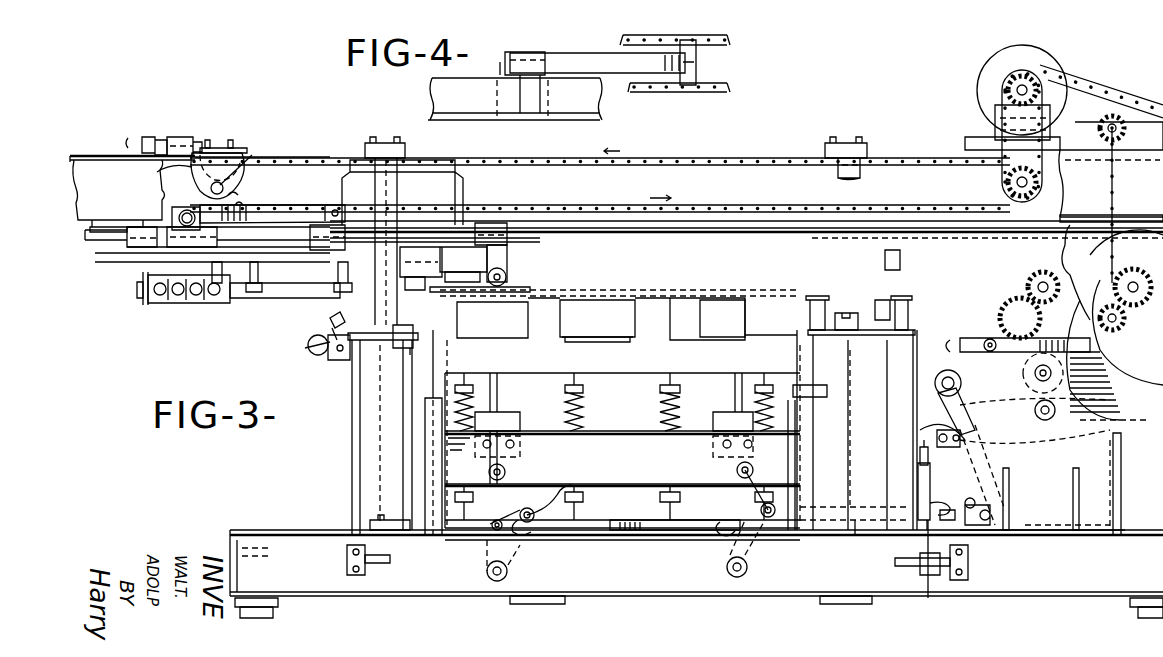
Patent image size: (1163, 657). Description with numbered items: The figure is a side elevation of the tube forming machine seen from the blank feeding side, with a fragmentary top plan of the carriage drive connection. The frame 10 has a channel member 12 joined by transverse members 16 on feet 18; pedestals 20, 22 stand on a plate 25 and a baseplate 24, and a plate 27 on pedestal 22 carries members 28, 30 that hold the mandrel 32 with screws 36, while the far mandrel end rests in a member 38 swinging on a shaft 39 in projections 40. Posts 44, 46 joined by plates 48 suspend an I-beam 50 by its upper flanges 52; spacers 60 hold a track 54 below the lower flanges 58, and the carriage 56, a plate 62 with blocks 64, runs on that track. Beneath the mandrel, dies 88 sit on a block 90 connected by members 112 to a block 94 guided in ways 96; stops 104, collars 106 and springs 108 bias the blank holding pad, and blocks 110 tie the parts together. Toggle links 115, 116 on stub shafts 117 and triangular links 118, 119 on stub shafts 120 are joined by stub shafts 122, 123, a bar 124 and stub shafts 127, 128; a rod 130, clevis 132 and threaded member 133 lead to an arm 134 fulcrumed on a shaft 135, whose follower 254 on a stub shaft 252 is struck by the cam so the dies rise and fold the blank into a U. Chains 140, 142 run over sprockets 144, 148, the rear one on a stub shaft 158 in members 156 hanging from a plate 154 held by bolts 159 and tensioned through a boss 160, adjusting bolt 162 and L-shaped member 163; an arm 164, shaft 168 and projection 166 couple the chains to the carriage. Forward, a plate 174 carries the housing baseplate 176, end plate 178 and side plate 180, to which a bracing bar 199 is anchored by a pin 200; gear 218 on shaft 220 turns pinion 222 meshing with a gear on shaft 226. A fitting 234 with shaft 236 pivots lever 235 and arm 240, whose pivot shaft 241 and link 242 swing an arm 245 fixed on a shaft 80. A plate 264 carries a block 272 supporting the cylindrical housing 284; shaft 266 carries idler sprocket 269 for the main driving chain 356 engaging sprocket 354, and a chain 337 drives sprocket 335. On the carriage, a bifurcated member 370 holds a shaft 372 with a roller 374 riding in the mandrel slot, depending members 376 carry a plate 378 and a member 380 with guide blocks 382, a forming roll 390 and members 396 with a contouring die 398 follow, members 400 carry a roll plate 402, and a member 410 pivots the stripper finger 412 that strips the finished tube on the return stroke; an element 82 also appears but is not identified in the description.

In FIG. 3, the frame 10 is at (430, 606).
In FIG. 3, the channel shaped structural member 12 is at (655, 596).
In FIG. 3, the transversely extending frame member 16 is at (284, 608).
In FIG. 3, the supporting feet 18 is at (275, 615).
In FIG. 3, the pedestal 20 is at (355, 447).
In FIG. 3, the pedestal 22 is at (870, 443).
In FIG. 3, the baseplate 24 is at (858, 525).
In FIG. 3, the transversely extending plate 25 is at (370, 526).
In FIG. 3, the transversely extending plate 27 is at (845, 322).
In FIG. 3, the upwardly extending member 28 is at (770, 336).
In FIG. 3, the upwardly extending member 30 is at (912, 305).
In FIG. 3, the mandrel 32 is at (736, 284).
In FIG. 3, the securing screws 36 is at (795, 318).
In FIG. 3, the upwardly extending member 38 is at (328, 320).
In FIG. 3, the shaft 39 is at (300, 349).
In FIG. 3, the spaced projections 40 is at (330, 362).
In FIG. 3, the post or strut 44 is at (397, 186).
In FIG. 3, the post or strut 46 is at (835, 172).
In FIG. 3, the transversely extending member 48 is at (388, 145).
In FIG. 3, the I-shaped beam 50 is at (88, 201).
In FIG. 3, the upper flange portions 52 is at (90, 155).
In FIG. 4, the plate forming a track or way 54 is at (596, 116).
In FIG. 3, the plate forming a track or way 54 is at (606, 234).
In FIG. 3, the carriage 56 is at (307, 250).
In FIG. 3, the lower flanges 58 is at (1142, 203).
In FIG. 3, the strips or spacers 60 is at (100, 240).
In FIG. 3, the plate 62 is at (128, 258).
In FIG. 3, the spaced blocks or members 64 is at (130, 245).
In FIG. 3, the shaft 80 is at (347, 555).
In FIG. 3, the bracket 82 is at (365, 572).
In FIG. 3, the die members 88 is at (543, 340).
In FIG. 3, the block 90 is at (620, 360).
In FIG. 3, the second block 94 is at (630, 456).
In FIG. 3, the vertically arranged ways 96 is at (425, 431).
In FIG. 3, the abutments or stops 104 is at (586, 494).
In FIG. 3, the collar or flange 106 is at (585, 388).
In FIG. 3, the expansive coil spring 108 is at (656, 414).
In FIG. 3, the blocks 110 is at (520, 420).
In FIG. 3, the struts or connecting means 112 is at (483, 388).
In FIG. 3, the link 115 is at (478, 494).
In FIG. 3, the link 116 is at (752, 494).
In FIG. 3, the stub shafts 117 is at (506, 470).
In FIG. 3, the link 118 is at (525, 532).
In FIG. 3, the link 119 is at (725, 545).
In FIG. 3, the stub shafts 120 is at (485, 571).
In FIG. 3, the stub shaft 122 is at (492, 525).
In FIG. 3, the stub shaft 123 is at (728, 540).
In FIG. 3, the connecting link or bar 124 is at (590, 520).
In FIG. 3, the stub shaft 127 is at (560, 480).
In FIG. 3, the stub shaft 128 is at (768, 528).
In FIG. 3, the actuating rod or bar 130 is at (838, 507).
In FIG. 3, the clevis 132 is at (975, 525).
In FIG. 3, the threaded member 133 is at (920, 500).
In FIG. 3, the oscillating beam or arm 134 is at (1010, 490).
In FIG. 3, the shaft 135 is at (1009, 480).
In FIG. 4, the chain 140 is at (735, 80).
In FIG. 3, the chain 140 is at (688, 159).
In FIG. 4, the chain 142 is at (727, 42).
In FIG. 3, the sprocket 144 is at (1000, 210).
In FIG. 3, the sprocket 148 is at (242, 200).
In FIG. 3, the plate 154 is at (220, 148).
In FIG. 3, the members 156 is at (157, 172).
In FIG. 3, the stub shafts 158 is at (252, 155).
In FIG. 3, the bolts 159 is at (229, 140).
In FIG. 3, the boss portion 160 is at (187, 135).
In FIG. 3, the adjusting bolt 162 is at (153, 133).
In FIG. 3, the L-shaped member 163 is at (128, 138).
In FIG. 4, the connecting arm or link 164 is at (600, 44).
In FIG. 3, the connecting arm or link 164 is at (330, 182).
In FIG. 4, the projection 166 is at (502, 54).
In FIG. 3, the projection 166 is at (180, 240).
In FIG. 4, the shaft 168 is at (520, 90).
In FIG. 3, the shaft 168 is at (185, 210).
In FIG. 3, the transversely extending plate 174 is at (1050, 545).
In FIG. 3, the baseplate 176 is at (1025, 530).
In FIG. 3, the end plate 178 is at (920, 466).
In FIG. 3, the side plate 180 is at (960, 345).
In FIG. 3, the bracing bar 199 is at (1035, 322).
In FIG. 3, the anchor pin 200 is at (952, 358).
In FIG. 3, the driven gear 218 is at (1040, 245).
In FIG. 3, the shaft 220 is at (1038, 285).
In FIG. 3, the pinion 222 is at (1010, 282).
In FIG. 3, the shaft 226 is at (1035, 376).
In FIG. 3, the block or fitting 234 is at (945, 410).
In FIG. 3, the lever or arm 235 is at (1035, 408).
In FIG. 3, the shaft 236 is at (976, 500).
In FIG. 3, the arm 240 is at (920, 430).
In FIG. 3, the pivot shaft 241 is at (930, 440).
In FIG. 3, the link or strut 242 is at (918, 478).
In FIG. 3, the arm 245 is at (930, 598).
In FIG. 3, the stub shaft 252 is at (933, 388).
In FIG. 3, the roller or cam follower 254 is at (935, 378).
In FIG. 3, the transversely extending plate portion 264 is at (1085, 147).
In FIG. 3, the shaft 266 is at (1145, 78).
In FIG. 3, the sprocket 269 is at (1108, 125).
In FIG. 3, the block or projection 272 is at (995, 132).
In FIG. 3, the cylindrical housing 284 is at (982, 70).
In FIG. 3, the sprocket 335 is at (1000, 186).
In FIG. 3, the driving chain 337 is at (1002, 105).
In FIG. 3, the sprocket 354 is at (1038, 100).
In FIG. 3, the main driving chain 356 is at (1085, 68).
In FIG. 3, the bifurcated member 370 is at (507, 250).
In FIG. 3, the shaft 372 is at (505, 280).
In FIG. 3, the circular disc or roller 374 is at (506, 272).
In FIG. 3, the depending members 376 is at (433, 258).
In FIG. 3, the plate 378 is at (410, 315).
In FIG. 3, the member 380 is at (442, 275).
In FIG. 3, the guide blocks 382 is at (460, 298).
In FIG. 3, the forming roll 390 is at (497, 656).
In FIG. 3, the members 396 is at (258, 270).
In FIG. 3, the contouring die 398 is at (283, 298).
In FIG. 3, the members 400 is at (235, 270).
In FIG. 3, the plate 402 is at (190, 300).
In FIG. 3, the member 410 is at (140, 298).
In FIG. 3, the stripper finger 412 is at (135, 290).